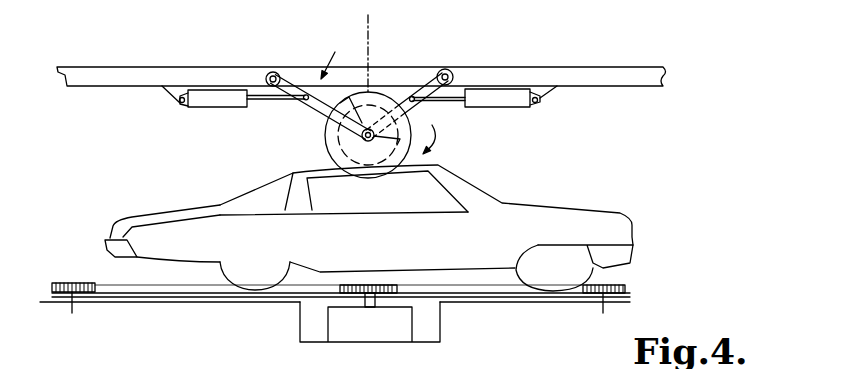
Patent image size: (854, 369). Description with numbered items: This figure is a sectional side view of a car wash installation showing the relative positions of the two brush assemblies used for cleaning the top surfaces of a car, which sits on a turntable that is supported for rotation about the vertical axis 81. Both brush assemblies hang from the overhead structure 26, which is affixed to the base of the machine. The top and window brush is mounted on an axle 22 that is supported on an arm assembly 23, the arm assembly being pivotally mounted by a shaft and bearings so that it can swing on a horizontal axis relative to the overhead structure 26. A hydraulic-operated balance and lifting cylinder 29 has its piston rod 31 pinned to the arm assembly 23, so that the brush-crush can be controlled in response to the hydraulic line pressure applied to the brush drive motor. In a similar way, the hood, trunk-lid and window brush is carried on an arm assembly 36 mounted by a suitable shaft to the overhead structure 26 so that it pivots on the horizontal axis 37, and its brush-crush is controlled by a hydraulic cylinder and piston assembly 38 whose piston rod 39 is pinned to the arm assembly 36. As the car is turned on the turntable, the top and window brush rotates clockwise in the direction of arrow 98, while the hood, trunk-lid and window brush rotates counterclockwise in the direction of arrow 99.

The overhead structure 26 is at (168, 76).
The vertical axis 81 is at (370, 28).
The axle 22 is at (343, 142).
The arm assembly 23 is at (325, 108).
The arm assembly 36 is at (404, 95).
The horizontal axis 37 is at (453, 75).
The hydraulic-operated balance and lifting cylinder 29 is at (203, 104).
The piston rod 31 is at (262, 100).
The hydraulic cylinder and piston assembly 38 is at (513, 101).
The piston rod 39 is at (447, 100).
The arrow 99 is at (323, 54).
The arrow 98 is at (437, 142).